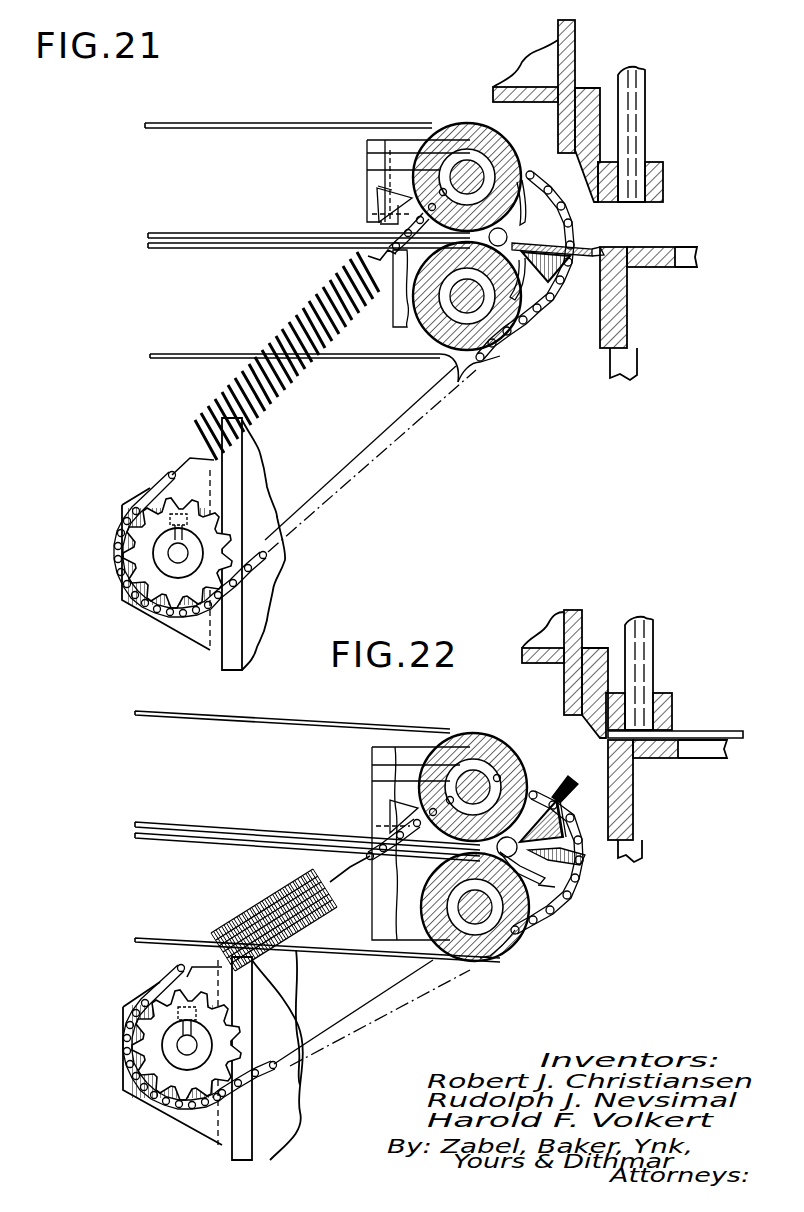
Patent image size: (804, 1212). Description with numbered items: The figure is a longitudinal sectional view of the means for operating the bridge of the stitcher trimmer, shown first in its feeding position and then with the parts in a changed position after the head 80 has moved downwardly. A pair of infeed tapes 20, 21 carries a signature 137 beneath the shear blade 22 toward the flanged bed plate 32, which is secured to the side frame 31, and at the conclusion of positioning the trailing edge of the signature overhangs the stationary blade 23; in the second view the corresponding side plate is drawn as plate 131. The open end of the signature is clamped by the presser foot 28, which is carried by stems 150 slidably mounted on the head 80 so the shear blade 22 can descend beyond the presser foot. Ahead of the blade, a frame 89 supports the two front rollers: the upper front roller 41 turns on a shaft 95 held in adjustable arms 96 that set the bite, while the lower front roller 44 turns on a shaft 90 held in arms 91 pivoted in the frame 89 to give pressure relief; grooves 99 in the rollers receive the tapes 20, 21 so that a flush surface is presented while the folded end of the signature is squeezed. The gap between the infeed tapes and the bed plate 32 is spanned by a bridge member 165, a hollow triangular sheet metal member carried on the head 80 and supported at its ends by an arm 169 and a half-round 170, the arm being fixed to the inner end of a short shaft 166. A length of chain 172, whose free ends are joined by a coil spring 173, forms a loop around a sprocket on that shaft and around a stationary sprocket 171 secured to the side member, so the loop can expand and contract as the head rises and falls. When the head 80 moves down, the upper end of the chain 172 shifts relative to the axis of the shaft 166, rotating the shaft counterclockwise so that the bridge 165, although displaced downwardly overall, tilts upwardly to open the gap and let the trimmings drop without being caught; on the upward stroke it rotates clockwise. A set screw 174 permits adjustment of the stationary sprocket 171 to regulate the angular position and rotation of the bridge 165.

In FIG. 21, the infeed tape 20 is at (228, 128).
In FIG. 22, the infeed tape 20 is at (165, 716).
In FIG. 21, the infeed tape 21 is at (190, 356).
In FIG. 22, the infeed tape 21 is at (145, 941).
In FIG. 21, the shear blade 22 is at (584, 92).
In FIG. 22, the shear blade 22 is at (590, 648).
In FIG. 21, the stationary blade 23 is at (612, 350).
In FIG. 21, the presser foot 28 is at (663, 172).
In FIG. 22, the presser foot 28 is at (673, 702).
In FIG. 21, the side frame 31 is at (263, 597).
In FIG. 21, the bed plate 32 is at (665, 250).
In FIG. 22, the bed plate 32 is at (666, 758).
In FIG. 21, the upper front roller 41 is at (367, 170).
In FIG. 22, the upper front roller 41 is at (372, 782).
In FIG. 21, the lower front roller 44 is at (462, 372).
In FIG. 22, the lower front roller 44 is at (493, 953).
In FIG. 21, the head 80 is at (537, 52).
In FIG. 22, the head 80 is at (548, 623).
In FIG. 21, the frame 89 is at (372, 213).
In FIG. 22, the frame 89 is at (380, 806).
In FIG. 21, the shaft 90 is at (456, 325).
In FIG. 22, the shaft 90 is at (475, 920).
In FIG. 21, the arms 91 is at (400, 322).
In FIG. 21, the shaft 95 is at (464, 172).
In FIG. 22, the shaft 95 is at (478, 780).
In FIG. 21, the arms 96 is at (378, 187).
In FIG. 22, the arms 96 is at (375, 752).
In FIG. 21, the grooves 99 is at (367, 153).
In FIG. 22, the grooves 99 is at (372, 765).
In FIG. 22, the side plate 131 is at (287, 1080).
In FIG. 22, the signature 137 is at (710, 732).
In FIG. 21, the stems 150 is at (645, 115).
In FIG. 22, the stems 150 is at (653, 640).
In FIG. 21, the bridge member 165 is at (593, 249).
In FIG. 22, the bridge member 165 is at (573, 779).
In FIG. 22, the shaft 166 is at (560, 900).
In FIG. 21, the arm 169 is at (550, 244).
In FIG. 22, the arm 169 is at (528, 858).
In FIG. 21, the half-round 170 is at (568, 276).
In FIG. 22, the half-round 170 is at (568, 846).
In FIG. 21, the stationary sprocket 171 is at (140, 573).
In FIG. 22, the stationary sprocket 171 is at (150, 1094).
In FIG. 21, the chain 172 is at (266, 565).
In FIG. 22, the chain 172 is at (377, 1013).
In FIG. 21, the coil spring 173 is at (218, 395).
In FIG. 22, the coil spring 173 is at (300, 880).
In FIG. 21, the set screw 174 is at (170, 518).
In FIG. 22, the set screw 174 is at (178, 1015).